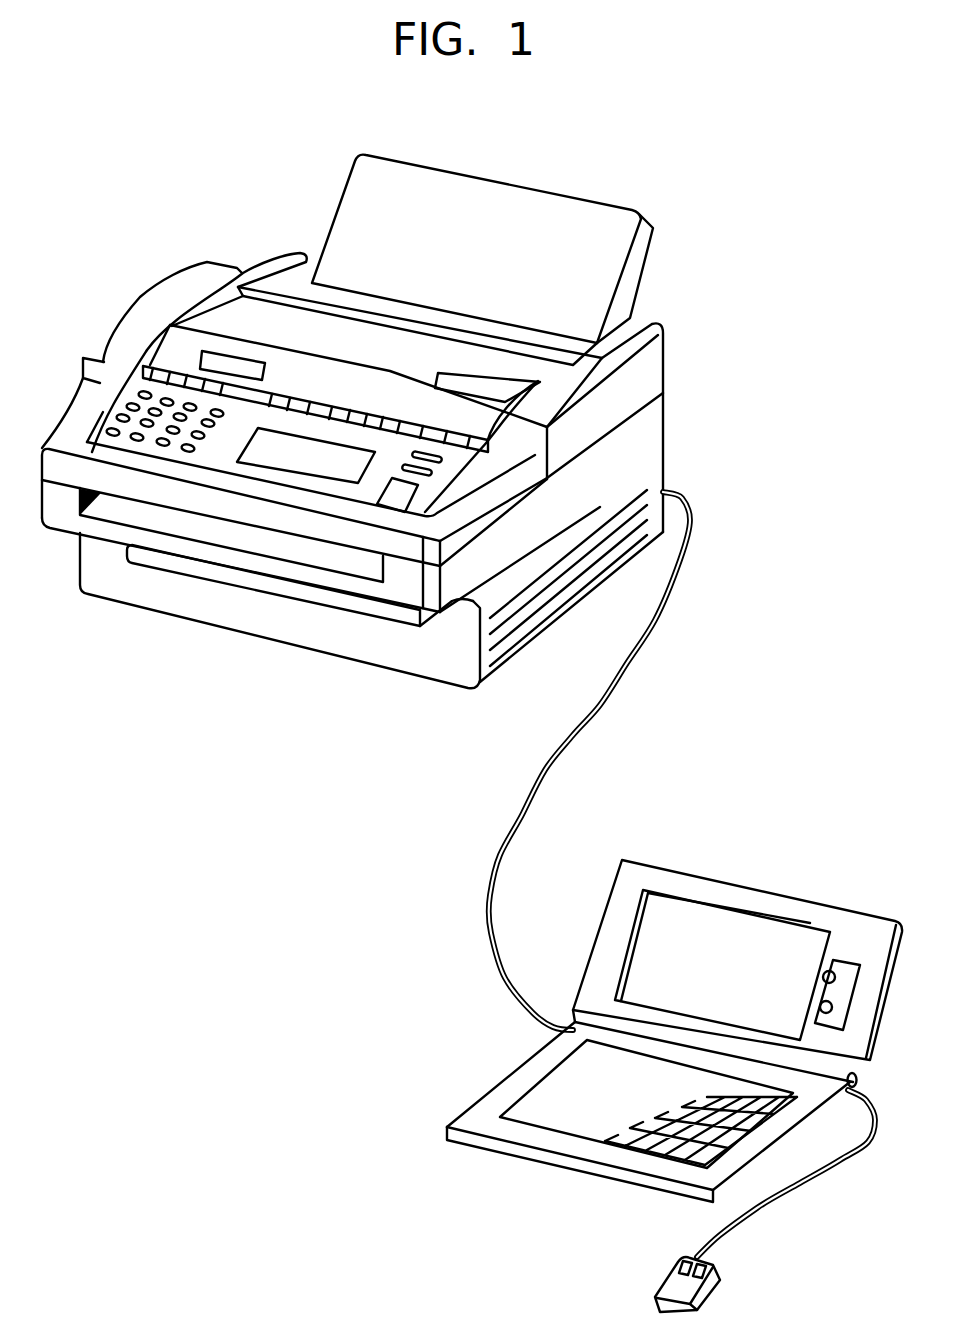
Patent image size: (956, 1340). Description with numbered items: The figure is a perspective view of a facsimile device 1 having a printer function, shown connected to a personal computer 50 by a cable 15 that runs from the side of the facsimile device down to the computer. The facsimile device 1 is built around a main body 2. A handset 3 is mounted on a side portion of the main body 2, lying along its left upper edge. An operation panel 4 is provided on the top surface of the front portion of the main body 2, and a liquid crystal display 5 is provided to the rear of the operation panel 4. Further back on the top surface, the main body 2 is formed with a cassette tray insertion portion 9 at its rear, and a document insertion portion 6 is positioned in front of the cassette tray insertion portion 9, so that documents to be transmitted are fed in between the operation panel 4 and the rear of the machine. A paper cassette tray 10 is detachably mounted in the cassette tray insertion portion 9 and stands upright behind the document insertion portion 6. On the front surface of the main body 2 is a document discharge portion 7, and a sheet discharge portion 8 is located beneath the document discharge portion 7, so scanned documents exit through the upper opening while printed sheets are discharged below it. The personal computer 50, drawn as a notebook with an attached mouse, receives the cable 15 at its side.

The facsimile device 1 is at (676, 458).
The main body 2 is at (650, 373).
The handset 3 is at (158, 297).
The operation panel 4 is at (103, 426).
The liquid crystal display (LCD) 5 is at (212, 360).
The document insertion portion 6 is at (387, 372).
The document discharge portion 7 is at (118, 510).
The sheet discharge portion 8 is at (260, 580).
The cassette tray insertion portion 9 is at (304, 262).
The paper cassette tray 10 is at (518, 205).
The cable 15 is at (626, 662).
The personal computer 50 is at (420, 1136).